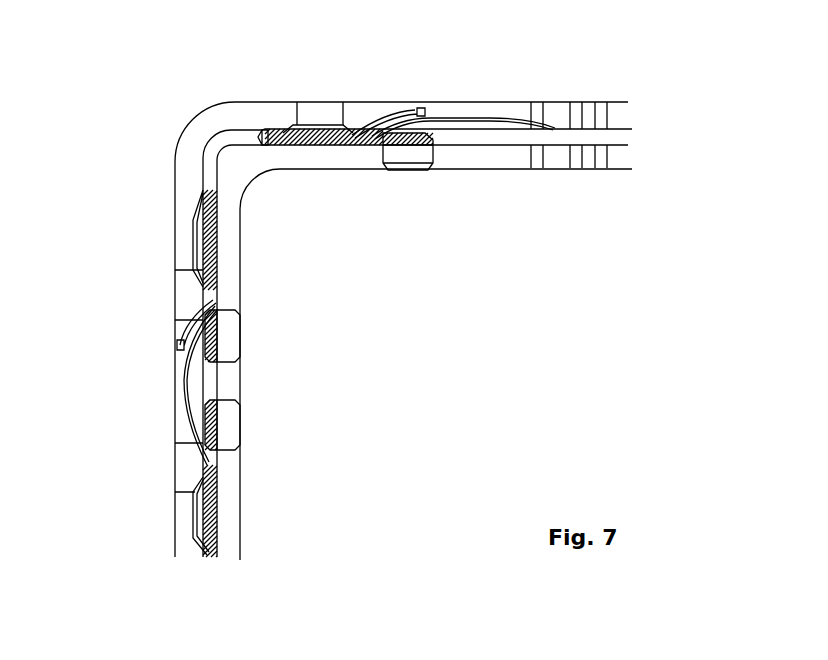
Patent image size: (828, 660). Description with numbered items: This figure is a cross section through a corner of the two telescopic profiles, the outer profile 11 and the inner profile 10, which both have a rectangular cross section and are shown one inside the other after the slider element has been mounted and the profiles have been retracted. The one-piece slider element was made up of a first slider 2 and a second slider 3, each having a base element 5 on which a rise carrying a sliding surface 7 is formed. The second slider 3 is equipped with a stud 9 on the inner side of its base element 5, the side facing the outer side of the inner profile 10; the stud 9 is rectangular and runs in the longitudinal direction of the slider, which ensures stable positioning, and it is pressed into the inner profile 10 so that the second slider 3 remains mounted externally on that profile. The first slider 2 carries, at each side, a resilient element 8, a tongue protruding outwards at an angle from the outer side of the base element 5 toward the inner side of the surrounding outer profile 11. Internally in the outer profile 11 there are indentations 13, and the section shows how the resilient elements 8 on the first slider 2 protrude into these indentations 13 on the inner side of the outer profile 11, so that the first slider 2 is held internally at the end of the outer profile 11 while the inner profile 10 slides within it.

The first slider 2 is at (216, 166).
The second slider 3 is at (215, 355).
The base element 5 is at (243, 120).
The sliding surface 7 is at (292, 125).
The resilient element 8 is at (410, 106).
The stud 9 is at (410, 172).
The inner profile 10 is at (233, 270).
The outer profile 11 is at (180, 213).
The indentation 13 is at (492, 118).